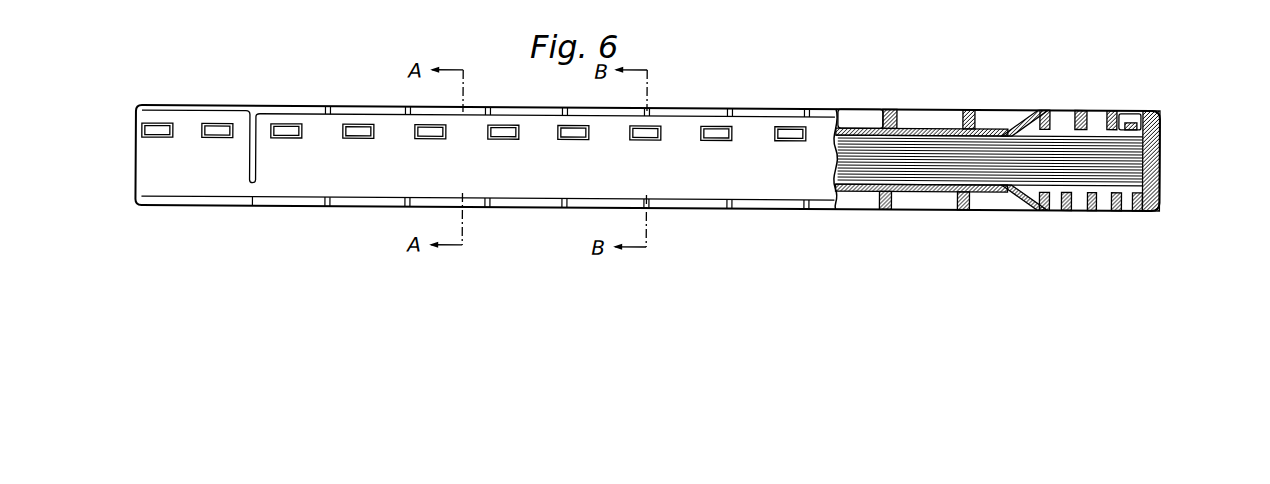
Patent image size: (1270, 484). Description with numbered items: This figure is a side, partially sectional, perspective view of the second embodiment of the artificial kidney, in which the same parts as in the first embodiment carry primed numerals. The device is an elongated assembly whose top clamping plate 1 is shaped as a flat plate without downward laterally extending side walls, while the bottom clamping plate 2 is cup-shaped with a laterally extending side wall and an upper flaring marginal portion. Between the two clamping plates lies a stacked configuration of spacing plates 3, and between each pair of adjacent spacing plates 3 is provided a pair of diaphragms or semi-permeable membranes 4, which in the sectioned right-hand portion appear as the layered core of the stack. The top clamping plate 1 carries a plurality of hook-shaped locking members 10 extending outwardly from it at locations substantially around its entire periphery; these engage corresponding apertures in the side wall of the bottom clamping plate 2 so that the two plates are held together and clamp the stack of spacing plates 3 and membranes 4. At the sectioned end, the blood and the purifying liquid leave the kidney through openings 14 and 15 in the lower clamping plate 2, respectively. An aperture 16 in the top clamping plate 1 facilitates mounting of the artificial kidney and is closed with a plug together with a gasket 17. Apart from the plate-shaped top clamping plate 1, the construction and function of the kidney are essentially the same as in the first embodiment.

The hook-shaped locking member 10 is at (358, 124).
The top clamping plate 1 is at (857, 120).
The bottom clamping plate 2 is at (851, 189).
The spacing plate 3 is at (928, 172).
The semi-permeable membrane 4 is at (953, 170).
The blood outlet opening 14 is at (1127, 202).
The purifying liquid outlet opening 15 is at (1082, 188).
The mounting aperture 16 is at (1128, 118).
The gasket 17 is at (1147, 126).